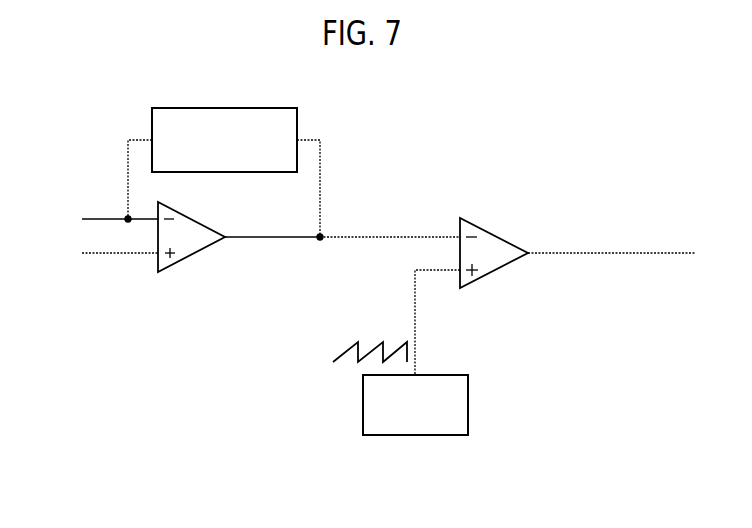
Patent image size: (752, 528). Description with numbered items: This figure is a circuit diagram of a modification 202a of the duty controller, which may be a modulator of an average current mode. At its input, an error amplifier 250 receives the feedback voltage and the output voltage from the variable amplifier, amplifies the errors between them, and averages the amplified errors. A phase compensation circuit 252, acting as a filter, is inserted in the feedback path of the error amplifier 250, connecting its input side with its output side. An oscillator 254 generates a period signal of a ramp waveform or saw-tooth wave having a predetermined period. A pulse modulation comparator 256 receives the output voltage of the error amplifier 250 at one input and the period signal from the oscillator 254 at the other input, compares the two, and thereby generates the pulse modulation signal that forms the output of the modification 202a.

The duty controller modification 202a is at (385, 497).
The error amplifier 250 is at (202, 255).
The phase compensation circuit 252 is at (251, 92).
The oscillator 254 is at (468, 405).
The pulse modulation comparator 256 is at (493, 230).